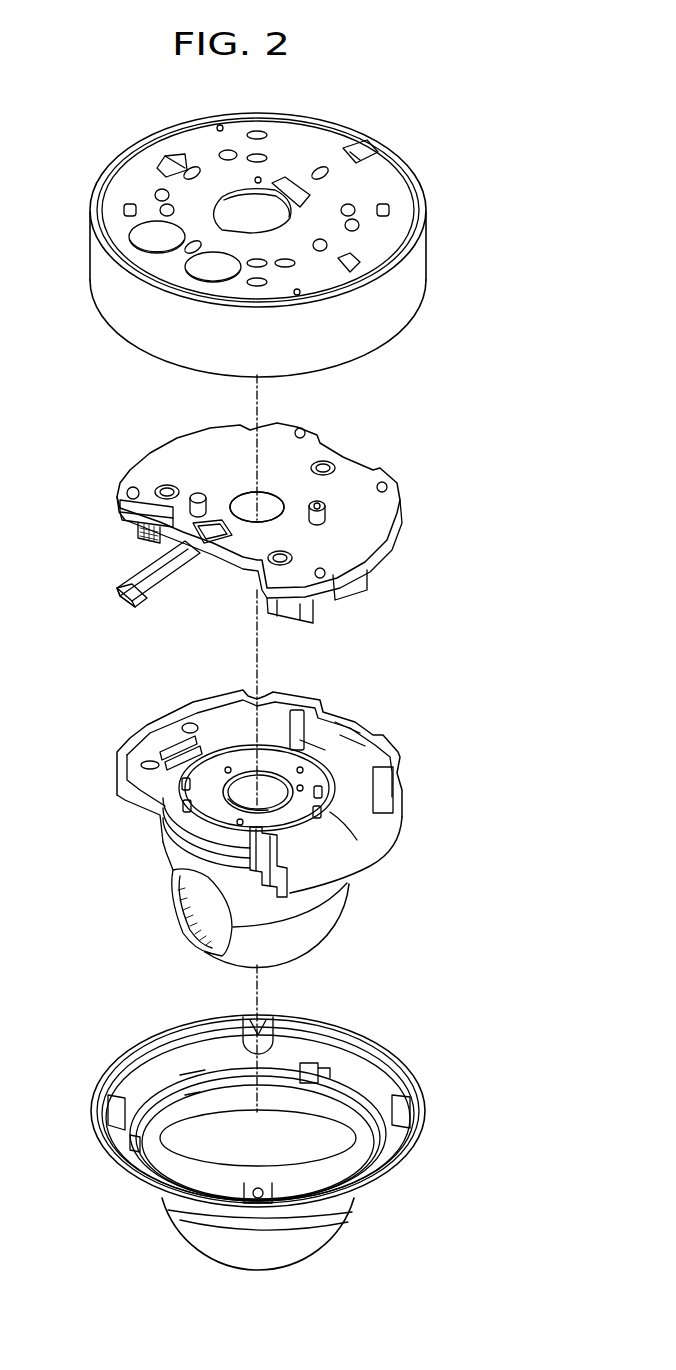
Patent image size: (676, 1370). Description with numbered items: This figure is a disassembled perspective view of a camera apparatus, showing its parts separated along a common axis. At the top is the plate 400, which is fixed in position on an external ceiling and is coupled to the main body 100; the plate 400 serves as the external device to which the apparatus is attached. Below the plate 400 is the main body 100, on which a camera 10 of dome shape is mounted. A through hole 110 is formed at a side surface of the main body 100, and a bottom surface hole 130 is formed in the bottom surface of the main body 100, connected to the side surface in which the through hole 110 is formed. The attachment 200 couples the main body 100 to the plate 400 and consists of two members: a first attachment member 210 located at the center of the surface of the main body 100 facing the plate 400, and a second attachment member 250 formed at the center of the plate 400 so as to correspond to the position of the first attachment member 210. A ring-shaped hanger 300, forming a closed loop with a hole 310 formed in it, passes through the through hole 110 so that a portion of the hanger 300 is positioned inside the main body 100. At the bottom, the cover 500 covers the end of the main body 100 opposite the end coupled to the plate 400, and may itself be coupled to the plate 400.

The camera 10 is at (420, 823).
The main body 100 is at (418, 527).
The through hole 110 is at (203, 567).
The bottom surface hole 130 is at (138, 533).
The attachment 200 is at (505, 328).
The first attachment member 210 is at (275, 500).
The second attachment member 250 is at (288, 218).
The hanger 300 is at (107, 608).
The hole 310 is at (149, 594).
The plate 400 is at (435, 252).
The cover 500 is at (440, 1102).